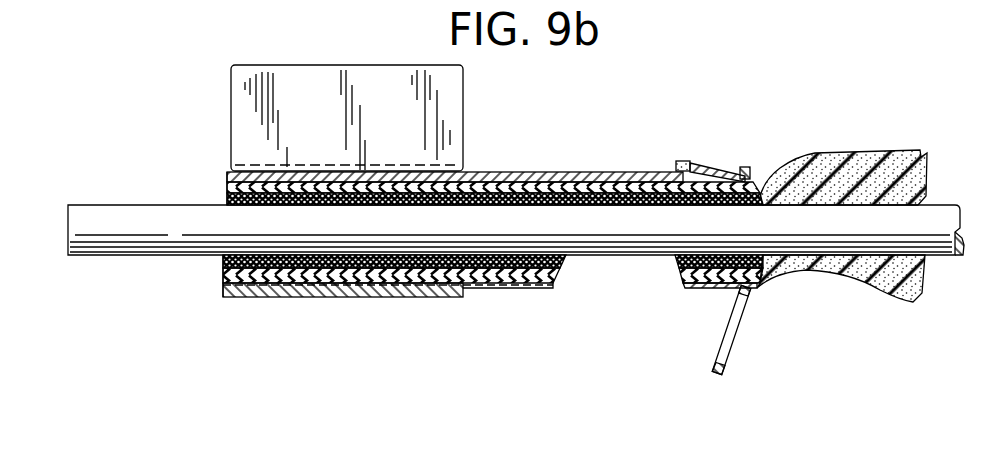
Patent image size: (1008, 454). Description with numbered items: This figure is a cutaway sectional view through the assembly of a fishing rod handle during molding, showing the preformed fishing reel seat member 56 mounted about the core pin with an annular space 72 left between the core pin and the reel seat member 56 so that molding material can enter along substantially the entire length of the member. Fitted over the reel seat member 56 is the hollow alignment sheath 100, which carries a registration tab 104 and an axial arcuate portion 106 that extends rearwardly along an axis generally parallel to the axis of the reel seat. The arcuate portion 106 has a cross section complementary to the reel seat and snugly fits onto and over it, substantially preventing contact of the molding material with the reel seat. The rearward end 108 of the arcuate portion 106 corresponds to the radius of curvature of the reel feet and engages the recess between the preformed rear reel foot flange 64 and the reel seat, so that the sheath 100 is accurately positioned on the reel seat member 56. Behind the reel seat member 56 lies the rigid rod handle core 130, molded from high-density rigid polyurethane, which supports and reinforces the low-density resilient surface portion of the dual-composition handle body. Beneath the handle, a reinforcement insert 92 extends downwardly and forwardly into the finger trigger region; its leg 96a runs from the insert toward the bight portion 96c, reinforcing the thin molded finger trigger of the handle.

The registration tab 104 is at (371, 75).
The alignment sheath 100 is at (227, 172).
The axial arcuate portion 106 is at (540, 172).
The rearward end 108 is at (683, 161).
The rear reel foot flange 64 is at (698, 166).
The rigid rod handle core 130 is at (872, 153).
The annular space 72 is at (228, 260).
The fishing reel seat member 56 is at (533, 286).
The reinforcement insert 92 is at (713, 333).
The leg or strut 96a is at (746, 309).
The bight portion 96c is at (751, 371).